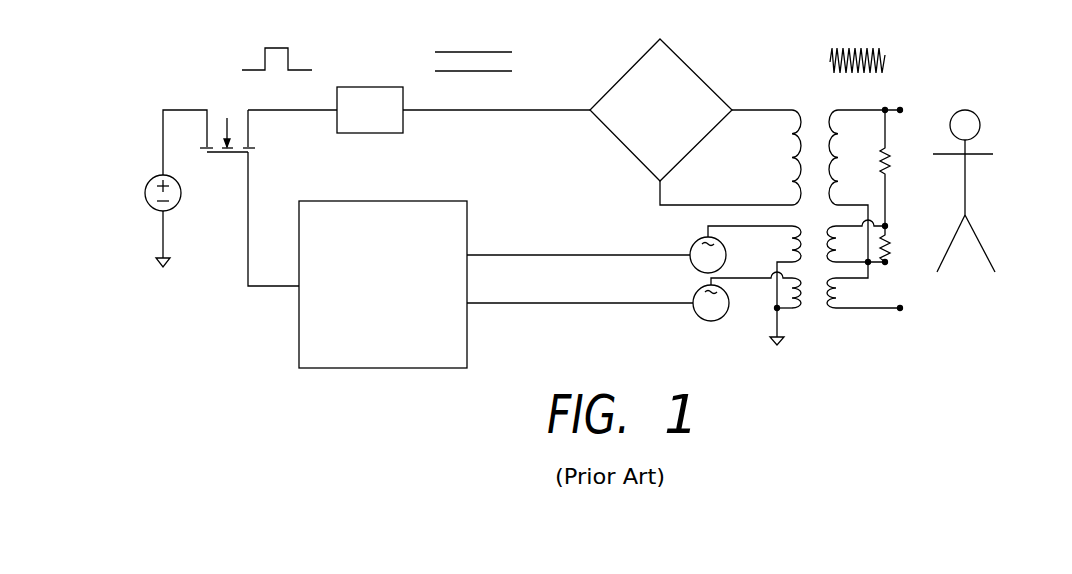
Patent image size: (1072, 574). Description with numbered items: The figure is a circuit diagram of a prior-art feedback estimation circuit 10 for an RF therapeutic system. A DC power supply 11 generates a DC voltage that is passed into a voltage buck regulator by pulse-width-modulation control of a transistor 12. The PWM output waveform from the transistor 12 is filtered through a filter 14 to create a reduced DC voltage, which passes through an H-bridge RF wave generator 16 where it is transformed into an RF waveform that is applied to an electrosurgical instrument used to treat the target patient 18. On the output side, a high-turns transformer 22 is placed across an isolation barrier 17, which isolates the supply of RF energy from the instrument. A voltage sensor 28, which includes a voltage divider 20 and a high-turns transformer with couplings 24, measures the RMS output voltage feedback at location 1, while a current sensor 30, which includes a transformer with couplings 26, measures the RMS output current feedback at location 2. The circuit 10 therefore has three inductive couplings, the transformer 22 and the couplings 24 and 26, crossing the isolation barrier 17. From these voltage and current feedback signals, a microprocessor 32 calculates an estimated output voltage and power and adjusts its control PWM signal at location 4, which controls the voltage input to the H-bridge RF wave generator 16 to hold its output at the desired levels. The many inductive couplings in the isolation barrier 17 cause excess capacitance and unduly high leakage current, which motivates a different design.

The circuit 10 is at (128, 83).
The DC power supply 11 is at (143, 173).
The transistor 12 is at (220, 127).
The location 4 is at (273, 219).
The filter 14 is at (367, 133).
The H-bridge RF wave generator 16 is at (635, 63).
The high-turns transformer 22 is at (832, 112).
The isolation barrier 17 is at (814, 219).
The couplings 24 is at (795, 230).
The voltage divider 20 is at (892, 250).
The couplings 26 is at (793, 310).
The voltage sensor 28 is at (700, 240).
The location 1 is at (579, 242).
The current sensor 30 is at (707, 318).
The location 2 is at (580, 289).
The microprocessor 32 is at (395, 368).
The patient 18 is at (967, 197).